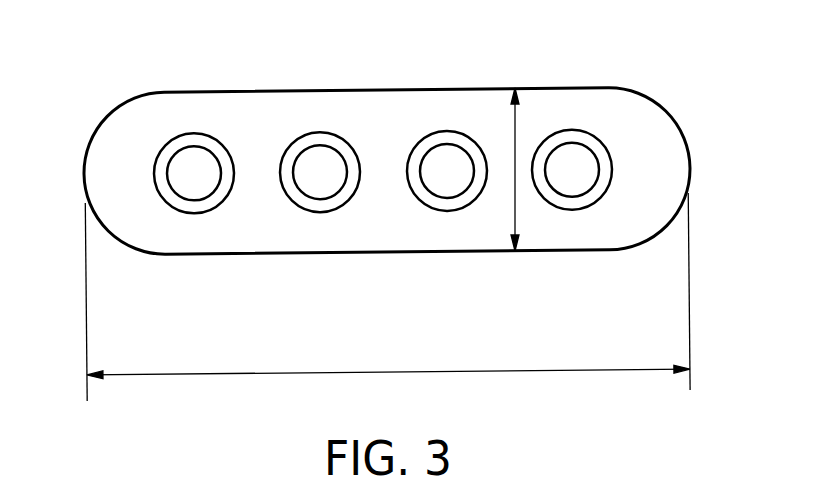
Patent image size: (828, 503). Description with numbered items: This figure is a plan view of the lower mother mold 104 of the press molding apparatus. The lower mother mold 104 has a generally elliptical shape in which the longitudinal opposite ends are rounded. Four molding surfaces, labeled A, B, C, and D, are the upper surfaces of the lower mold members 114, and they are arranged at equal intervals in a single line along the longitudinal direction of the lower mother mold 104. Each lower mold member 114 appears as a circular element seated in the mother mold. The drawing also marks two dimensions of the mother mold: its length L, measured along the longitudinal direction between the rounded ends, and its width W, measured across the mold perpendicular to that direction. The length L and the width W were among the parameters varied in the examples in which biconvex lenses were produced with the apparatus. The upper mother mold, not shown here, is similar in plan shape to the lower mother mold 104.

The lower mother mold 104 is at (418, 90).
The lower mold members 114 is at (188, 212).
The width W is at (515, 210).
The length L is at (387, 297).